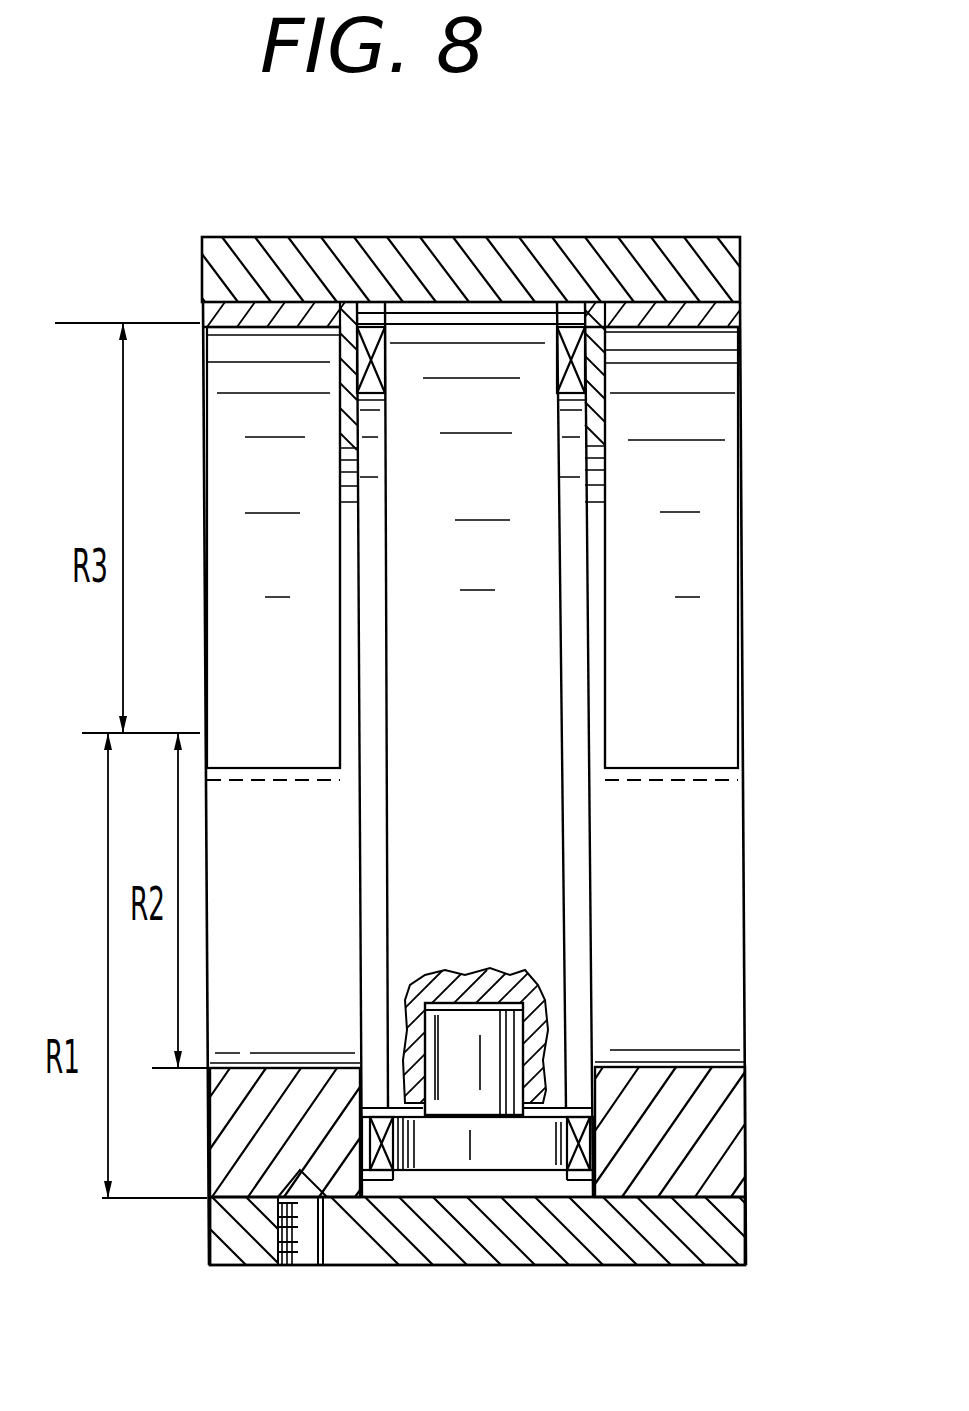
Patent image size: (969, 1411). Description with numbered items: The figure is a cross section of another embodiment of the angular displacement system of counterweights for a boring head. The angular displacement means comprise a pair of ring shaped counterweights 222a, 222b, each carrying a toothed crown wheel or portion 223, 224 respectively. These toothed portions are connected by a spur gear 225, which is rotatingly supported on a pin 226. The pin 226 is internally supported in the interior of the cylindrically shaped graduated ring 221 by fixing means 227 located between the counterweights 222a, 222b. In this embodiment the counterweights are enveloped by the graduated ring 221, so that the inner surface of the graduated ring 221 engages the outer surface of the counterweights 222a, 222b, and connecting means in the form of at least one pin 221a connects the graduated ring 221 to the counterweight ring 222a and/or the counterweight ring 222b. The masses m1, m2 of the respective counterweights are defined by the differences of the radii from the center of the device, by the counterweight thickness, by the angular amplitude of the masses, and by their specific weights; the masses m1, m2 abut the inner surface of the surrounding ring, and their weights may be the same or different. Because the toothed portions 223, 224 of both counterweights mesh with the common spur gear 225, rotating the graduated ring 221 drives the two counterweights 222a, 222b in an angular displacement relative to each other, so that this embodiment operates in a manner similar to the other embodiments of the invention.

The graduated ring 221 is at (617, 1243).
The pin 221a is at (302, 1267).
The ring shaped counterweight 222a is at (258, 362).
The ring shaped counterweight 222b is at (700, 362).
The toothed crown wheel or portion 223 is at (392, 345).
The toothed crown wheel or portion 224 is at (552, 330).
The spur gear 225 is at (486, 1150).
The pin 226 is at (508, 1048).
The fixing means 227 is at (515, 1003).
The mass m1 is at (300, 1097).
The mass m2 is at (692, 1180).